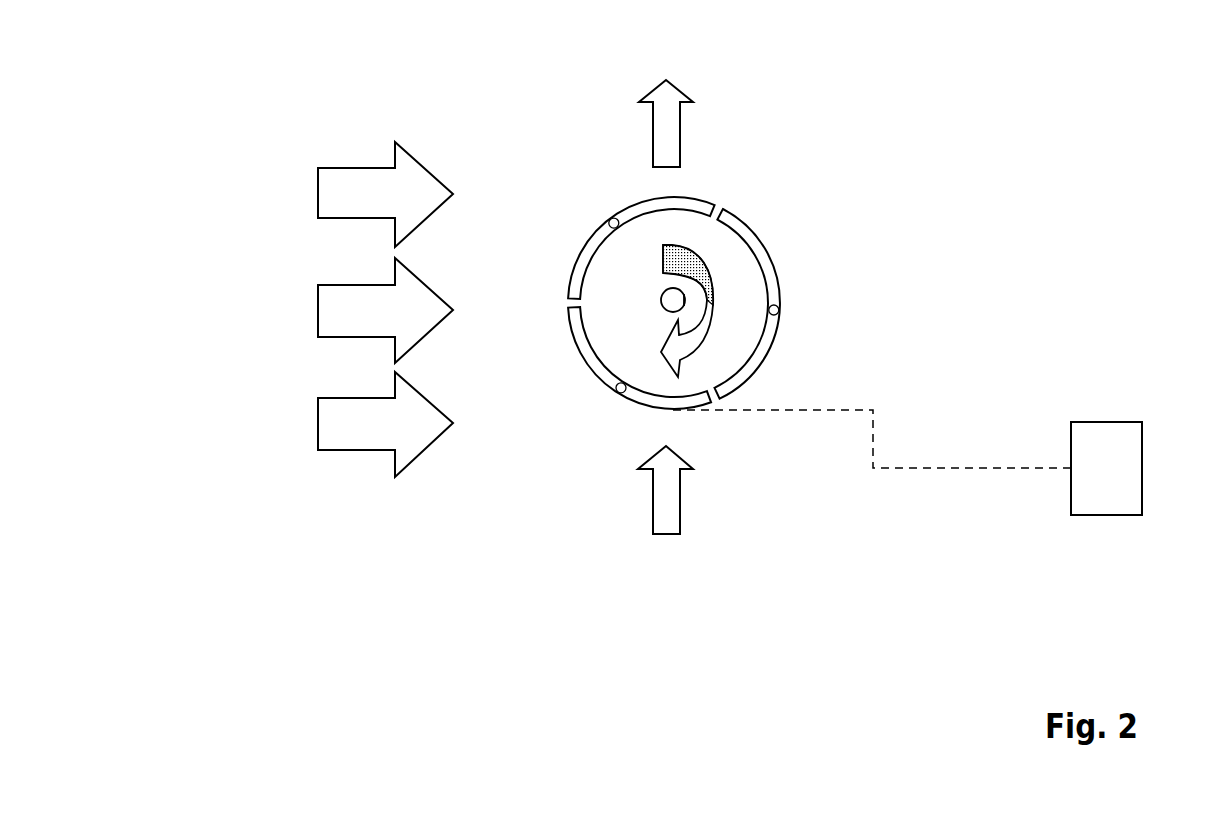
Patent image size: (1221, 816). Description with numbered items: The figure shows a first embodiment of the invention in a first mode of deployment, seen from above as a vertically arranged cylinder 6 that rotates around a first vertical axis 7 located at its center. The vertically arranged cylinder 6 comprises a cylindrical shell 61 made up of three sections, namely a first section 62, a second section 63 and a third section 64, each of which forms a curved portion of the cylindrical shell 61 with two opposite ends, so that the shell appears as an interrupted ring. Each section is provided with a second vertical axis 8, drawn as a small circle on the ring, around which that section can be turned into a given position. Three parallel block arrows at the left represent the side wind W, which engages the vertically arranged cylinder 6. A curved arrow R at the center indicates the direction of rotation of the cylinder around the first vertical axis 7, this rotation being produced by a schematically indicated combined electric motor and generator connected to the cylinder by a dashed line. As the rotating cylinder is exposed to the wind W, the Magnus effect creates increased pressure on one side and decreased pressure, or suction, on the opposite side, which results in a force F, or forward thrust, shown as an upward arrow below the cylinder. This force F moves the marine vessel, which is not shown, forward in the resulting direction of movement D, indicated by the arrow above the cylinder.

The vertically arranged cylinder 6 is at (751, 307).
The cylindrical shell 61 is at (751, 257).
The first section 62 is at (747, 233).
The second section 63 is at (588, 363).
The third section 64 is at (638, 210).
The first vertical axis 7 is at (671, 299).
The second vertical axis 8 is at (609, 222).
The direction of rotation R is at (722, 327).
The wind W is at (275, 317).
The direction of movement D is at (698, 117).
The force F is at (710, 493).